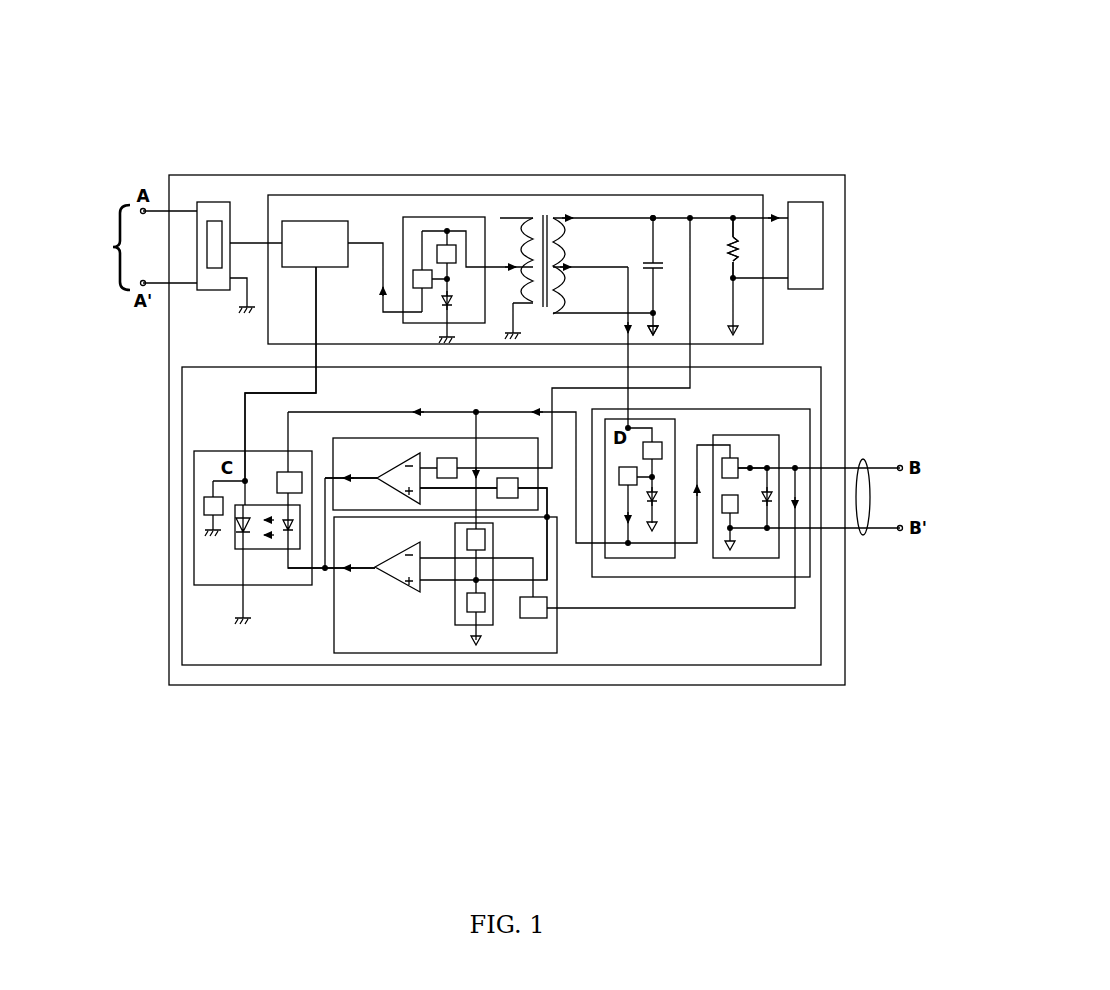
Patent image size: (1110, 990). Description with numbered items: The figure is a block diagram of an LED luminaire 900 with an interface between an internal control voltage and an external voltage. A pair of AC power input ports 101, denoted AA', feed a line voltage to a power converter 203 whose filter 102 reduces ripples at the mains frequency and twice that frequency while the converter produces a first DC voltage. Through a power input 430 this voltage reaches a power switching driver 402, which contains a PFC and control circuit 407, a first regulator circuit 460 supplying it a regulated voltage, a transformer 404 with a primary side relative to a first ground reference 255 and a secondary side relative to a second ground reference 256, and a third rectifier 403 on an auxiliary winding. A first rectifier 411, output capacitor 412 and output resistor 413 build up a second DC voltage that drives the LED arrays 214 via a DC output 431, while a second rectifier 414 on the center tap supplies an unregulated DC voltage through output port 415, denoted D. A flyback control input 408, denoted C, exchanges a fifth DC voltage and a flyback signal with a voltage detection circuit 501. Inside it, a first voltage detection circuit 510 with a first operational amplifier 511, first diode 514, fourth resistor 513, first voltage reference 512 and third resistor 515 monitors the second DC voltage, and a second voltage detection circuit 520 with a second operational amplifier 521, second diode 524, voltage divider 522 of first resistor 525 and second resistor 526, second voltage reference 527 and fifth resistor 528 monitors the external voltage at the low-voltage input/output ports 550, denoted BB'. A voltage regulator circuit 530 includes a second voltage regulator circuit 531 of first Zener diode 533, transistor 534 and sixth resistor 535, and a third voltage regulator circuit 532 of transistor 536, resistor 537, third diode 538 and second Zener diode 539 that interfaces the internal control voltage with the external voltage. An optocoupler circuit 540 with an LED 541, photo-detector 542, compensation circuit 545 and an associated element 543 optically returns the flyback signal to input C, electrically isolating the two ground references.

The LED luminaire 900 is at (503, 170).
The voltage detection circuit 501 is at (287, 668).
The power switching driver 402 is at (403, 192).
The pair of AC power input ports 101 is at (111, 208).
The power converter 203 is at (212, 199).
The filter 102 is at (218, 220).
The power input 430 is at (249, 241).
The PFC and control circuit 407 is at (317, 219).
The first regulator circuit 460 is at (458, 215).
The transformer 404 is at (545, 214).
The third rectifier 403 is at (520, 269).
The first rectifier 411 is at (575, 215).
The second rectifier 414 is at (573, 264).
The DC output 431 is at (655, 214).
The output capacitor 412 is at (660, 260).
The output resistor 413 is at (737, 236).
The LED arrays 214 is at (797, 201).
The first ground reference 255 is at (444, 336).
The second ground reference 256 is at (657, 329).
The flyback control input 408 is at (244, 478).
The optocoupler circuit 540 is at (191, 481).
The compensation circuit 545 is at (205, 515).
The photo-detector 542 is at (250, 528).
The resistor 543 is at (286, 471).
The LED 541 is at (285, 536).
The first voltage detection circuit 510 is at (373, 437).
The first operational amplifier 511 is at (410, 496).
The first diode 514 is at (346, 477).
The fourth resistor 513 is at (445, 457).
The first voltage reference 512 is at (487, 486).
The third resistor 515 is at (520, 500).
The output port 415 is at (631, 426).
The second voltage regulator circuit 531 is at (632, 561).
The transistor 534 is at (638, 486).
The sixth resistor 535 is at (662, 460).
The first Zener diode 533 is at (656, 502).
The voltage regulator circuit 530 is at (776, 580).
The third voltage regulator circuit 532 is at (781, 561).
The transistor 536 is at (736, 457).
The resistor 537 is at (739, 514).
The third diode 538 is at (752, 466).
The second Zener diode 539 is at (770, 495).
The pair of low-voltage input/output ports 550 is at (868, 532).
The second voltage detection circuit 520 is at (341, 657).
The second operational amplifier 521 is at (398, 584).
The second diode 524 is at (345, 571).
The second voltage reference 527 is at (453, 629).
The first resistor 525 is at (484, 552).
The second resistor 526 is at (481, 614).
The voltage divider 522 is at (475, 583).
The fifth resistor 528 is at (533, 620).